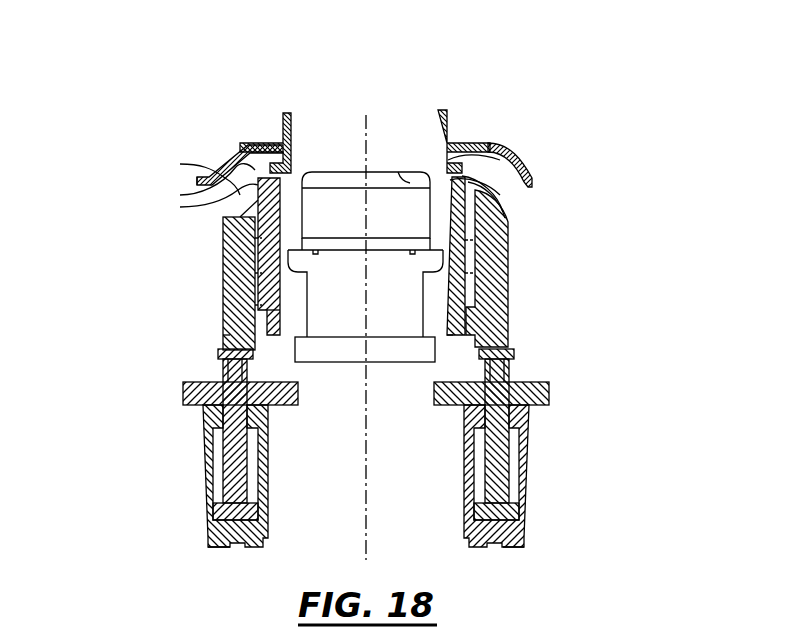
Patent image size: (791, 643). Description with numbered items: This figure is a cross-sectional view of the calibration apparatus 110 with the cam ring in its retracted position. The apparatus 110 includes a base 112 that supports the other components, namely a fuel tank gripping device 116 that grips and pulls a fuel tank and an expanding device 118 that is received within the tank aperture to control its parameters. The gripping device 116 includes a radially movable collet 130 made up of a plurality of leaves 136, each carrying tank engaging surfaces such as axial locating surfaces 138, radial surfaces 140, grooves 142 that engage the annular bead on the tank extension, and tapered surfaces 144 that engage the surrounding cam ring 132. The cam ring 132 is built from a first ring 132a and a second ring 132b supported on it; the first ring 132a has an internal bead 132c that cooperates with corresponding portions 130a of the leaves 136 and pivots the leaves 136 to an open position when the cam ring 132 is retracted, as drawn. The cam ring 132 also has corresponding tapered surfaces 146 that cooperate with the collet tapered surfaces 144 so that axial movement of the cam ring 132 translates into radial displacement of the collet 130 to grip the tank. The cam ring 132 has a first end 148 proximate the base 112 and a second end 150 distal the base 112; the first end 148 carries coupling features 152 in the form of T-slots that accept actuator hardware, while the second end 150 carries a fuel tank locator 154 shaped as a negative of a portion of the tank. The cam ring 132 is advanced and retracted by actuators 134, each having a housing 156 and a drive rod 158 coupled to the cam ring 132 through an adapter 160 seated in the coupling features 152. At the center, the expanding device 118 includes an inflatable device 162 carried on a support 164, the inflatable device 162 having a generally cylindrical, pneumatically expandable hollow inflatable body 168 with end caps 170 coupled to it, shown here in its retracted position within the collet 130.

The apparatus 110 is at (142, 100).
The base 112 is at (185, 394).
The fuel tank gripping device 116 is at (160, 289).
The expanding device 118 is at (374, 136).
The collet 130 is at (480, 288).
The corresponding portions of the collet leaves 130a is at (453, 335).
The cam ring 132 is at (218, 303).
The first ring 132a is at (222, 327).
The second ring 132b is at (245, 236).
The internal bead 132c is at (290, 320).
The actuators 134 is at (200, 552).
The leaves 136 is at (258, 215).
The axial locating surfaces 138 is at (472, 143).
The radial surfaces 140 is at (440, 163).
The grooves 142 is at (243, 175).
The tapered surfaces 144 is at (200, 178).
The corresponding tapered surfaces 146 is at (225, 195).
The first end 148 is at (512, 334).
The second end 150 is at (512, 200).
The coupling features 152 is at (512, 353).
The fuel tank locator 154 is at (500, 210).
The housings 156 is at (528, 472).
The drive rods 158 is at (503, 443).
The adapters 160 is at (550, 392).
The inflatable device 162 is at (328, 165).
The support 164 is at (354, 313).
The inflatable body 168 is at (354, 226).
The end caps 170 is at (398, 170).